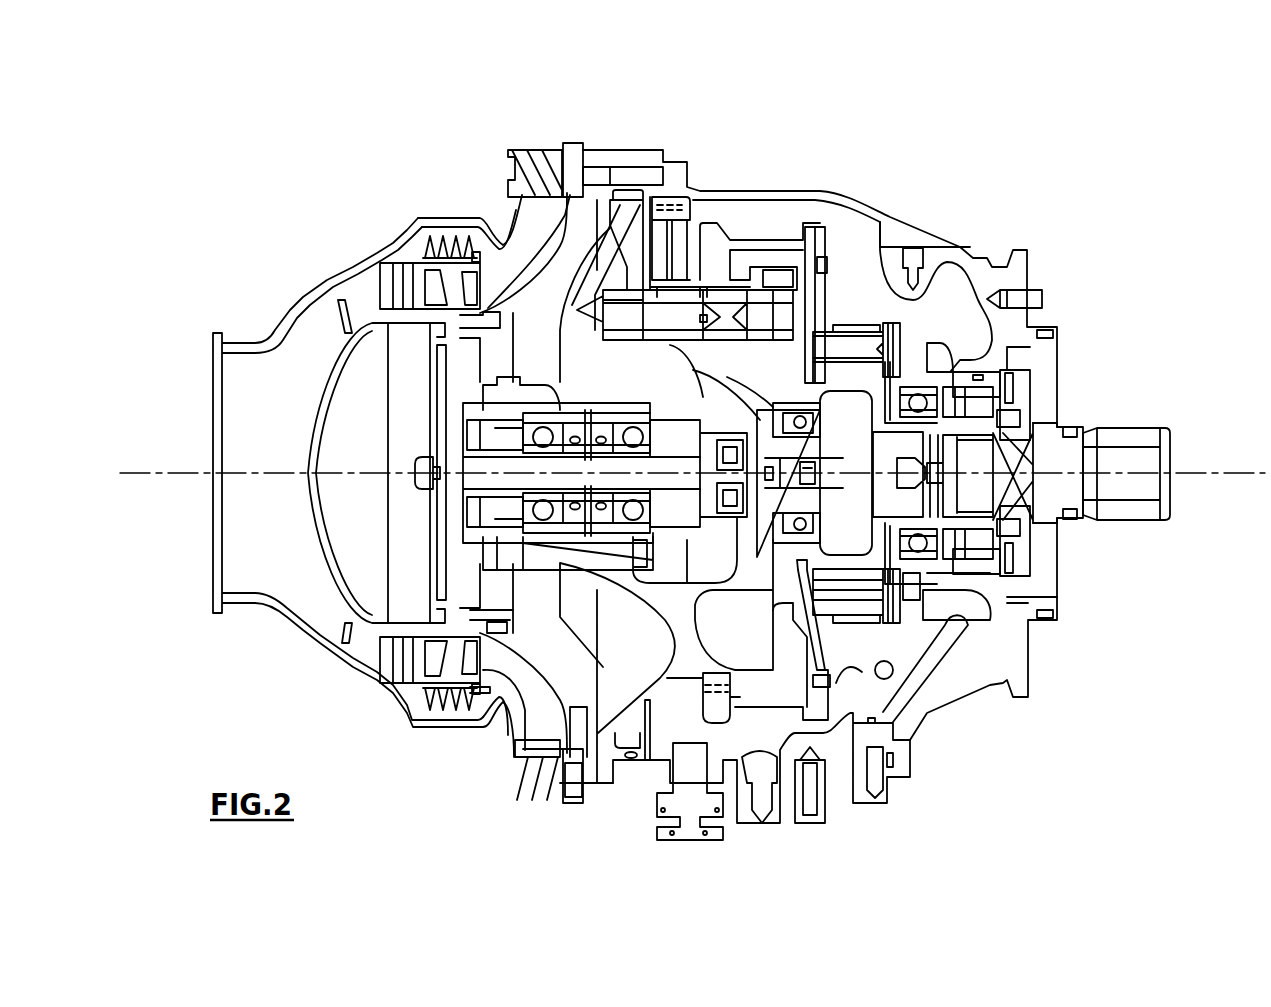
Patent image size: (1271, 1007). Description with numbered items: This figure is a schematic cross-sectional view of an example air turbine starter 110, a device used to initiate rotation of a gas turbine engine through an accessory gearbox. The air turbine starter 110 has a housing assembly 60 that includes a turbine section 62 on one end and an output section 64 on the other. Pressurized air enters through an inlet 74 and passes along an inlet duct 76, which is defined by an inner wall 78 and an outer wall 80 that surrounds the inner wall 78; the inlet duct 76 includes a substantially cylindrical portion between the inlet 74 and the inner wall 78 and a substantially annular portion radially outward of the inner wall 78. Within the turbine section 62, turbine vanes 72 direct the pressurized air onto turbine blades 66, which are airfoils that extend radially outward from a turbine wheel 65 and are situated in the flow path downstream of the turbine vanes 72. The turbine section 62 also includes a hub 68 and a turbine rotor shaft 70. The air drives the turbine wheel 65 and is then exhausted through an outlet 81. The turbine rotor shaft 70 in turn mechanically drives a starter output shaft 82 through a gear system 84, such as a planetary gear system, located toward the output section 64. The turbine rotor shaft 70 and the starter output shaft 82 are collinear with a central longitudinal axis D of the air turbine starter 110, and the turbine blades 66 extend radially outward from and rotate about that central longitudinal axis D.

The air turbine starter 110 is at (880, 95).
The housing assembly 60 is at (636, 788).
The turbine section 62 is at (390, 228).
The output section 64 is at (888, 190).
The turbine wheel 65 is at (454, 394).
The turbine blades 66 is at (446, 288).
The hub 68 is at (452, 432).
The turbine rotor shaft 70 is at (535, 465).
The turbine vanes 72 is at (362, 290).
The inlet 74 is at (195, 540).
The inlet duct 76 is at (307, 600).
The inner wall 78 is at (322, 395).
The outer wall 80 is at (266, 338).
The outlet 81 is at (507, 176).
The starter output shaft 82 is at (1092, 417).
The gear system 84 is at (908, 333).
The central longitudinal axis D is at (1210, 473).